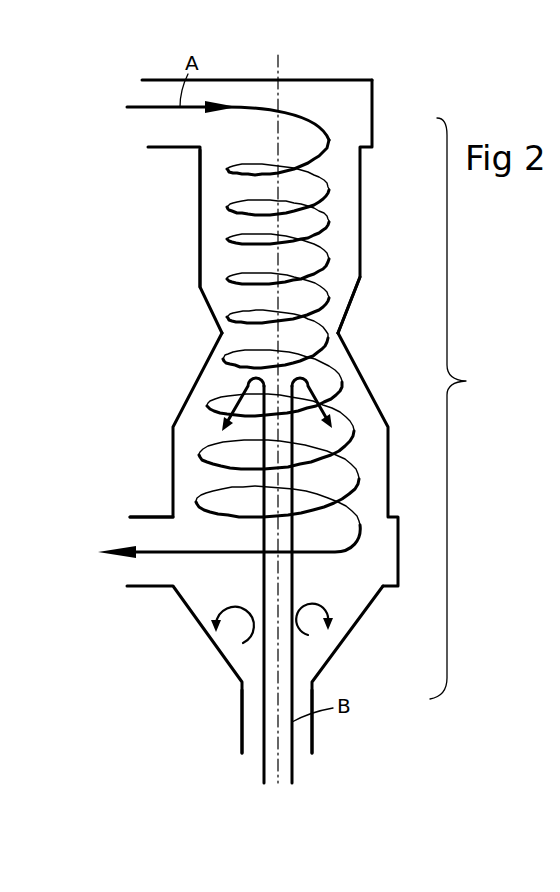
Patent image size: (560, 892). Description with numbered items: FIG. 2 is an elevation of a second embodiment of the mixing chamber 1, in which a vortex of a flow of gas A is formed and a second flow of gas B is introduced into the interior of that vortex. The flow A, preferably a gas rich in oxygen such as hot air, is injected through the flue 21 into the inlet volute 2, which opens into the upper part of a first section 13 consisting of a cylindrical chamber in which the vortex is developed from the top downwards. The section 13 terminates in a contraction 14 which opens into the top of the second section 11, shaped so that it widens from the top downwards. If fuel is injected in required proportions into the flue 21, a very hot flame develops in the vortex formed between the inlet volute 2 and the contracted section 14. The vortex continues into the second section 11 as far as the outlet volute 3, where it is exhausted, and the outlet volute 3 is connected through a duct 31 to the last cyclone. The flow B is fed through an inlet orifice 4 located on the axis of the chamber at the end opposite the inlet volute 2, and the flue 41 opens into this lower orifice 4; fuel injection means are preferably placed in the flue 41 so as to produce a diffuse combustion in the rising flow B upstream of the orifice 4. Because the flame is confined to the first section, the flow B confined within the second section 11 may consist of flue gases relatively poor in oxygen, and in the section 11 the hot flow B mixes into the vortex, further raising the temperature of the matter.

The mixing chamber 1 is at (457, 408).
The inlet volute 2 is at (373, 113).
The outlet volute 3 is at (398, 516).
The inlet orifice 4 is at (240, 682).
The upper portion of the chamber 11 is at (208, 390).
The first section 13 is at (178, 199).
The contraction 14 is at (340, 331).
The flue 21 is at (155, 80).
The duct 31 is at (148, 516).
The flue 41 is at (240, 728).